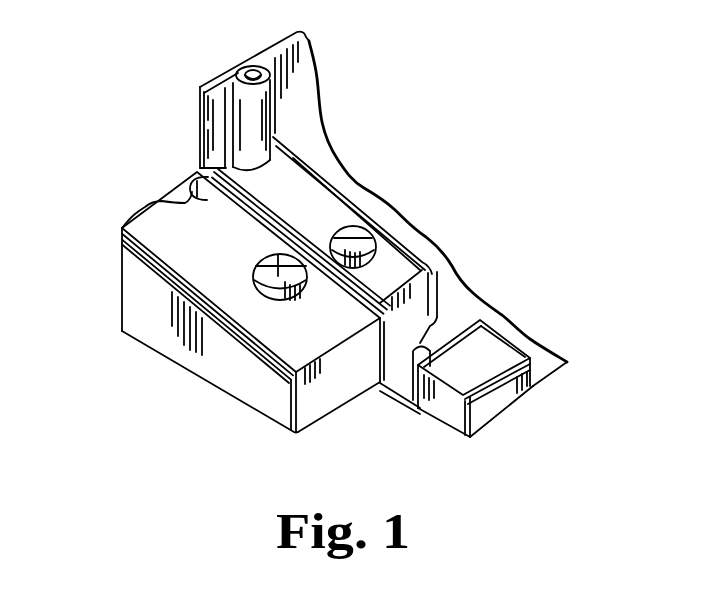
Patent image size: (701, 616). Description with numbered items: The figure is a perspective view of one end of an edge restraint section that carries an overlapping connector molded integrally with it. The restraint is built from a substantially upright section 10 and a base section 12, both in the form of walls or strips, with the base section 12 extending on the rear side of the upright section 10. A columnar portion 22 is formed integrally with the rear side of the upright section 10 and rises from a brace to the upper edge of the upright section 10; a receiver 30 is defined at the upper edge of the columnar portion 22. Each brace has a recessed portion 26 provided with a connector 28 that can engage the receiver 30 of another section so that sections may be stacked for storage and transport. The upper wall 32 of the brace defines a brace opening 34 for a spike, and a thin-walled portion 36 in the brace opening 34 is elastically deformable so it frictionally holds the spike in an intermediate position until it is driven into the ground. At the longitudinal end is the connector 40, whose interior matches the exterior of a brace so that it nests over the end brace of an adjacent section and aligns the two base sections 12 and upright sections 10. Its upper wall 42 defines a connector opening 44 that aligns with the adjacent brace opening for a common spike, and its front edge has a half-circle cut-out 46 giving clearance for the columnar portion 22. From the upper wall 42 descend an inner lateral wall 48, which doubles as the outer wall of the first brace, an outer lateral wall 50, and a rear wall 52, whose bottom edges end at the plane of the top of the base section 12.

The upright section 10 is at (305, 96).
The base section 12 is at (448, 290).
The columnar portion 22 is at (217, 89).
The recessed portion of brace 26 is at (438, 326).
The connector 28 is at (486, 319).
The receiver 30 is at (252, 68).
The upper wall of brace 32 is at (318, 198).
The brace opening 34 is at (391, 211).
The thin-walled portion 36 is at (395, 216).
The connector 40 is at (211, 312).
The upper wall of connector 42 is at (185, 221).
The connector opening 44 is at (182, 335).
The half-circle cut-out 46 is at (192, 188).
The inner lateral wall 48 is at (287, 293).
The outer lateral wall 50 is at (237, 387).
The rear wall 52 is at (360, 380).